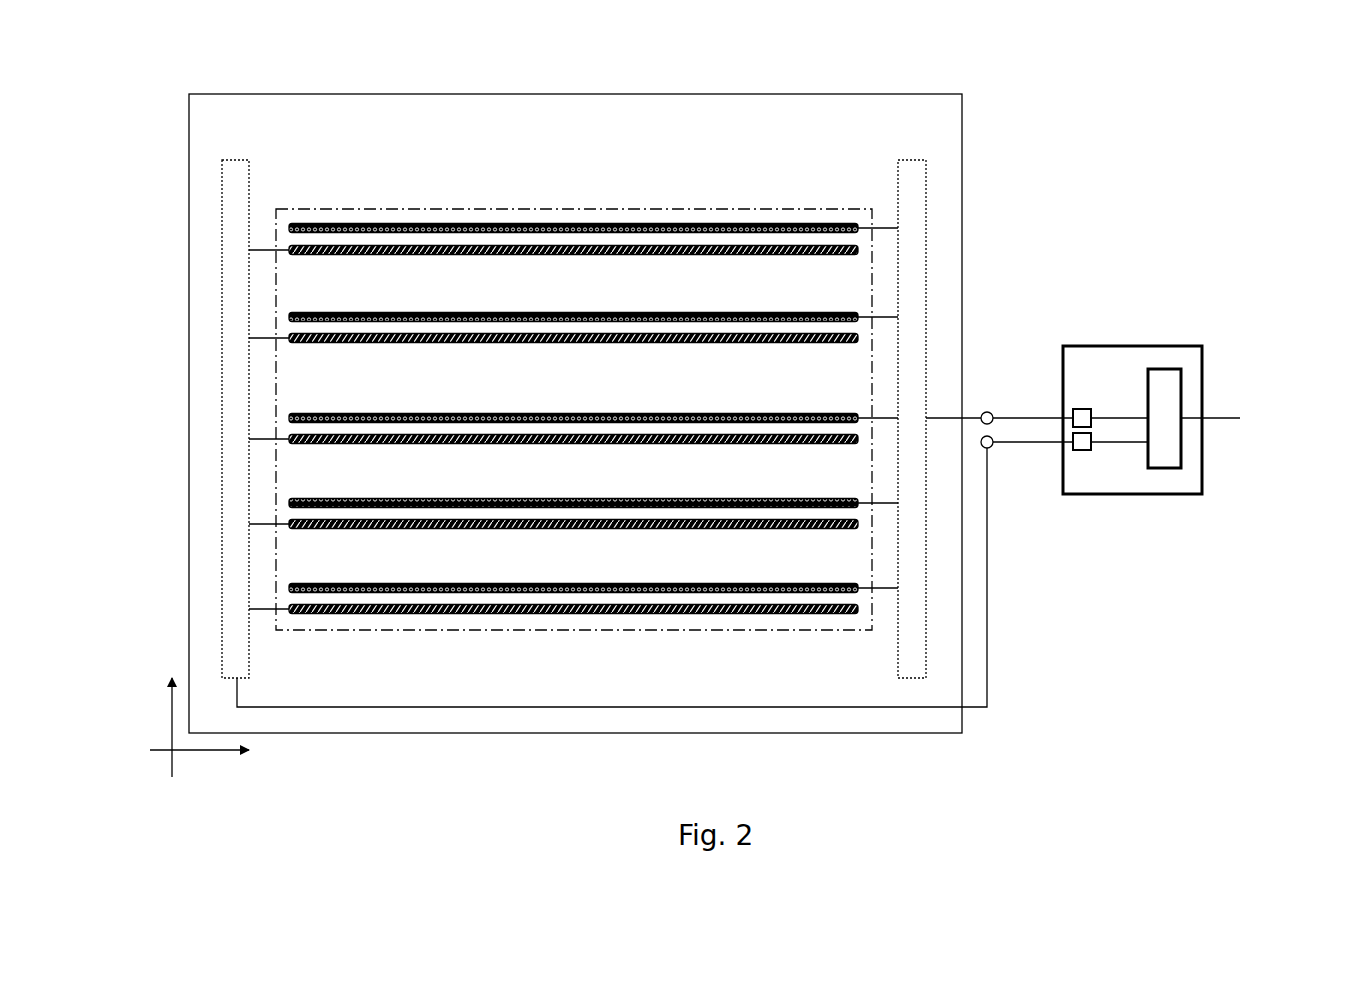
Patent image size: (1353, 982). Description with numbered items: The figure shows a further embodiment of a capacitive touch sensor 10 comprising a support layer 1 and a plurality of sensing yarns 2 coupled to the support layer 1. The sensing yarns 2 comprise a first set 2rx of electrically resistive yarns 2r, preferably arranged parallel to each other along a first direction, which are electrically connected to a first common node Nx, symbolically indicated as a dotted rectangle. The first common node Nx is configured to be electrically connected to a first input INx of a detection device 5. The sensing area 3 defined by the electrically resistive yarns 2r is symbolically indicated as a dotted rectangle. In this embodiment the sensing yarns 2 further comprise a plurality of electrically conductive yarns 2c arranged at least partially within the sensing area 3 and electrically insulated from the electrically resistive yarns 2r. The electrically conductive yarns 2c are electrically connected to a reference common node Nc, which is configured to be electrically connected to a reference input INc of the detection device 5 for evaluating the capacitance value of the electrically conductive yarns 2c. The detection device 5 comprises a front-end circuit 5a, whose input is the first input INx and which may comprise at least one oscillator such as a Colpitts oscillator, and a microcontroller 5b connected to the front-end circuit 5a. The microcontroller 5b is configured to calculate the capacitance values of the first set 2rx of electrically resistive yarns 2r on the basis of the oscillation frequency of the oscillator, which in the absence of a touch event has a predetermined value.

The capacitive touch sensor 10 is at (1111, 111).
The support layer 1 is at (930, 112).
The sensing yarns 2 is at (468, 428).
The electrically resistive yarns 2r is at (408, 212).
The first set of electrically resistive yarns 2rx is at (287, 417).
The electrically conductive yarns 2c is at (575, 614).
The sensing area 3 is at (765, 208).
The reference common node Nc is at (222, 224).
The first common node Nx is at (920, 190).
The first input INx is at (987, 412).
The reference input INc is at (989, 448).
The detection device 5 is at (1156, 436).
The front-end circuit 5a is at (1080, 408).
The microcontroller 5b is at (1163, 458).